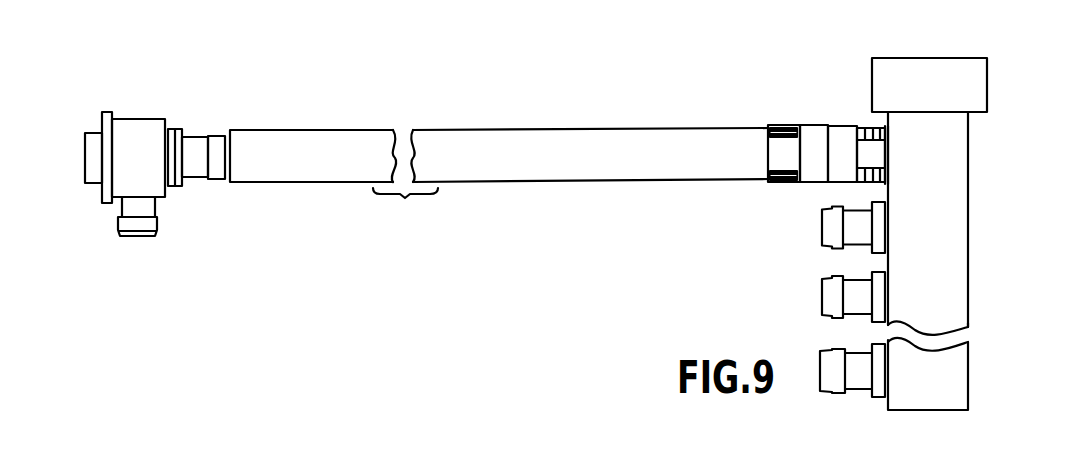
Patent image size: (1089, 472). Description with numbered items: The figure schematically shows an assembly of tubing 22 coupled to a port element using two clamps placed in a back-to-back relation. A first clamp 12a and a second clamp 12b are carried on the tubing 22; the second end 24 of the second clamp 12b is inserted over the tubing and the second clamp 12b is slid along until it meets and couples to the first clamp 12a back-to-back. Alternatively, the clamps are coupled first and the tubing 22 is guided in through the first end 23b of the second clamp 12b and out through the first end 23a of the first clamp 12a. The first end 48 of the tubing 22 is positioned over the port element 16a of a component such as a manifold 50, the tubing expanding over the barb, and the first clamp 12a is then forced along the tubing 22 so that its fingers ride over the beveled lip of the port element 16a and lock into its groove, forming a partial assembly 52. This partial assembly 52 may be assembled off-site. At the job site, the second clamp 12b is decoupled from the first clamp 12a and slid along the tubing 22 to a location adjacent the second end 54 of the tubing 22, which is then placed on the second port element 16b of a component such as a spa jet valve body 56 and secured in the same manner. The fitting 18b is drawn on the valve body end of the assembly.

The manifold 50 is at (963, 165).
The partial assembly 52 is at (505, 89).
The second end of the tubing 54 is at (255, 131).
The spa jet valve body 56 is at (138, 120).
The tubing 22 is at (610, 131).
The port element 16a is at (880, 127).
The second port element 16b is at (195, 138).
The barb fitting 18b is at (222, 179).
The first clamp 12a is at (840, 126).
The second clamp 12b is at (805, 126).
The first end of the first clamp 23a is at (888, 152).
The first end of the second clamp 23b is at (767, 150).
The second end of the second clamp 24 is at (815, 183).
The first end of the tubing 48 is at (865, 127).